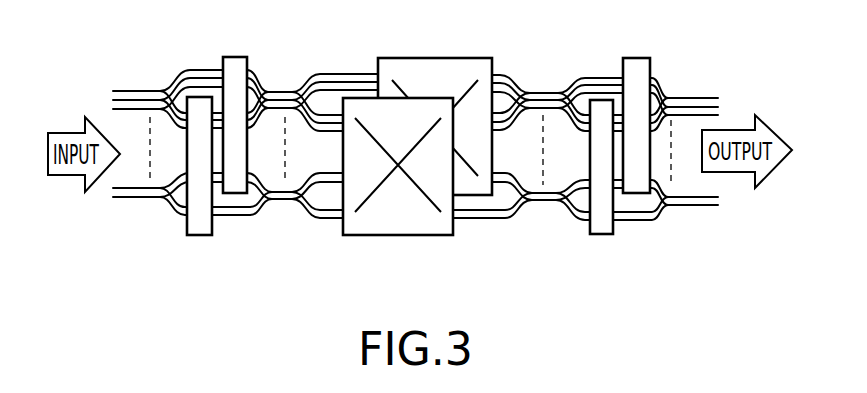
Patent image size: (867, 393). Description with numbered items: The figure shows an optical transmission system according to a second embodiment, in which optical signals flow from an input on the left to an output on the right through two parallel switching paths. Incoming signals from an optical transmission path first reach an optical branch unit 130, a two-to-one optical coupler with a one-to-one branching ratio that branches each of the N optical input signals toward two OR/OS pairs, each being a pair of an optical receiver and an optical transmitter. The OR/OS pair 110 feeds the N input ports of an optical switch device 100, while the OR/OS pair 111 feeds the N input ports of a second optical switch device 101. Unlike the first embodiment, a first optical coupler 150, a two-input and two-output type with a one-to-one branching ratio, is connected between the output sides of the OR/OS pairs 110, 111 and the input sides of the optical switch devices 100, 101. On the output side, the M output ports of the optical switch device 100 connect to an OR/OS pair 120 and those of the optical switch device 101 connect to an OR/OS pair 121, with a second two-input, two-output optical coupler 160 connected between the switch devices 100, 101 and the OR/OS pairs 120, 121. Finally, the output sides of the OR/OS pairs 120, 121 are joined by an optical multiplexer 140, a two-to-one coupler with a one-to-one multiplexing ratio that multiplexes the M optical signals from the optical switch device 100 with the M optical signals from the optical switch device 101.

The optical switch device 100 is at (408, 236).
The optical switch device 101 is at (408, 58).
The OR/OS pair 110 is at (201, 236).
The OR/OS pair 111 is at (230, 57).
The OR/OS pair 120 is at (601, 235).
The OR/OS pair 121 is at (633, 58).
The optical branch unit 130 is at (150, 88).
The optical multiplexer 140 is at (669, 93).
The optical coupler 150 is at (284, 203).
The optical coupler 160 is at (543, 203).